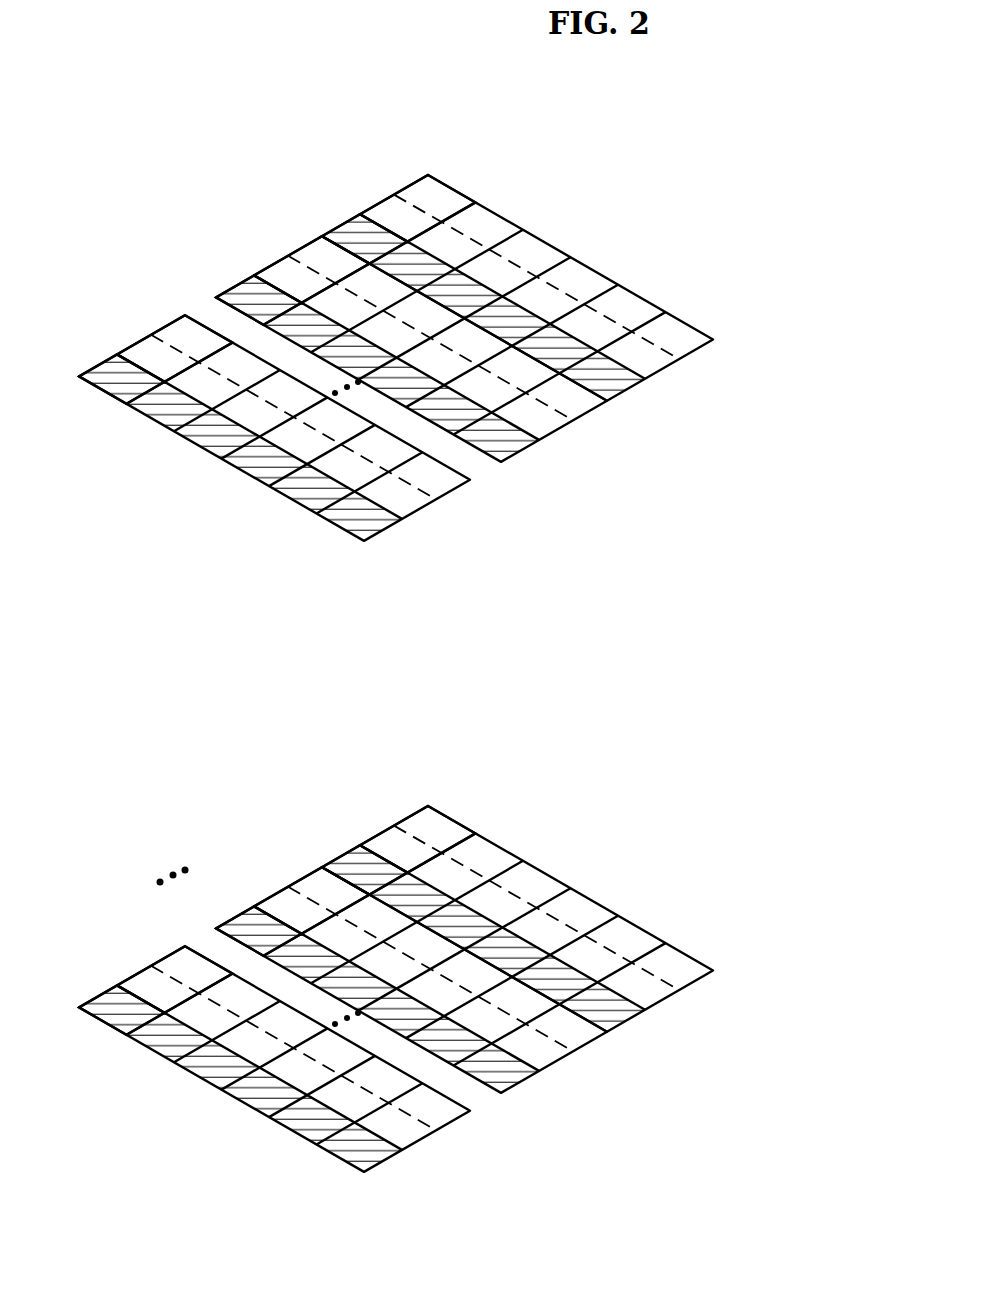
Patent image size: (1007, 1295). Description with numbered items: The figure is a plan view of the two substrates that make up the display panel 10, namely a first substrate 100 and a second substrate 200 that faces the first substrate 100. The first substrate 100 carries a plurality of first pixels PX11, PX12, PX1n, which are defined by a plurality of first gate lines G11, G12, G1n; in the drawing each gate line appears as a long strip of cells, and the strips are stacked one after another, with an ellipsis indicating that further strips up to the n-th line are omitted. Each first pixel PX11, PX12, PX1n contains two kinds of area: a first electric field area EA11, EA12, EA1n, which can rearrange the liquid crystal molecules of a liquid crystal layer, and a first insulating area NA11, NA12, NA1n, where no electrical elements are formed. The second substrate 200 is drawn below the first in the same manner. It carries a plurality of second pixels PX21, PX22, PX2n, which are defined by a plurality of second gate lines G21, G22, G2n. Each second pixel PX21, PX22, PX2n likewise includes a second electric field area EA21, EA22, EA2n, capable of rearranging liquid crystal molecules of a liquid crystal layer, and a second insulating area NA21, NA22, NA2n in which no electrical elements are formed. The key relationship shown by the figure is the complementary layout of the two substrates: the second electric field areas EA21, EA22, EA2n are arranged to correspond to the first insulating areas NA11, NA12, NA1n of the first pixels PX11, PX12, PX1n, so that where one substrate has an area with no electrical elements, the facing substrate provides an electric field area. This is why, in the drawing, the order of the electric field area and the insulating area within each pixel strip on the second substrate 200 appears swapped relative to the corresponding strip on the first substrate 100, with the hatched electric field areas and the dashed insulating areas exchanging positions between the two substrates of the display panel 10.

The display panel 10 is at (810, 294).
The first substrate 100 is at (713, 341).
The second substrate 200 is at (713, 972).
The first gate line G11 is at (650, 380).
The first gate line G12 is at (502, 461).
The first gate line G1n is at (365, 540).
The second gate line G21 is at (650, 1011).
The second gate line G22 is at (502, 1092).
The second gate line G2n is at (365, 1171).
The first pixel PX11 is at (353, 120).
The first pixel PX12 is at (253, 176).
The first pixel PX1n is at (115, 258).
The second pixel PX21 is at (355, 752).
The second pixel PX22 is at (253, 808).
The second pixel PX2n is at (115, 891).
The first insulating area NA11 is at (410, 185).
The first insulating area NA12 is at (307, 243).
The first insulating area NA1n is at (167, 325).
The second insulating area NA21 is at (361, 844).
The second insulating area NA22 is at (255, 905).
The second insulating area NA2n is at (118, 984).
The first electric field area EA11 is at (361, 213).
The first electric field area EA12 is at (255, 274).
The first electric field area EA1n is at (118, 353).
The second electric field area EA21 is at (410, 815).
The second electric field area EA22 is at (307, 873).
The second electric field area EA2n is at (167, 955).